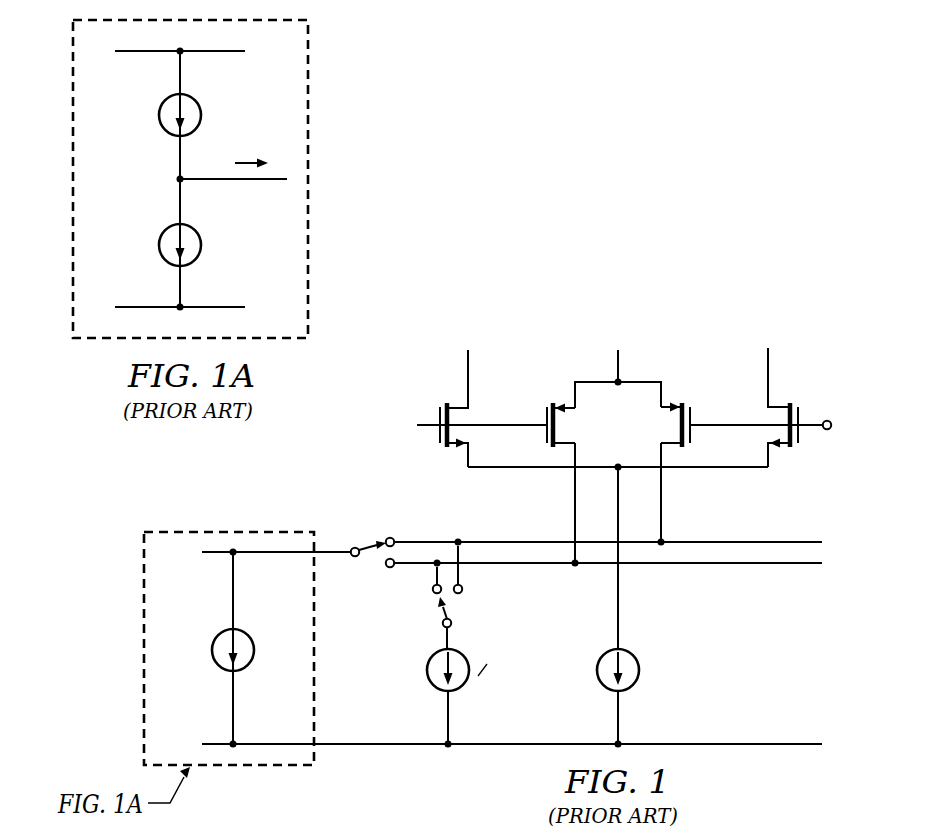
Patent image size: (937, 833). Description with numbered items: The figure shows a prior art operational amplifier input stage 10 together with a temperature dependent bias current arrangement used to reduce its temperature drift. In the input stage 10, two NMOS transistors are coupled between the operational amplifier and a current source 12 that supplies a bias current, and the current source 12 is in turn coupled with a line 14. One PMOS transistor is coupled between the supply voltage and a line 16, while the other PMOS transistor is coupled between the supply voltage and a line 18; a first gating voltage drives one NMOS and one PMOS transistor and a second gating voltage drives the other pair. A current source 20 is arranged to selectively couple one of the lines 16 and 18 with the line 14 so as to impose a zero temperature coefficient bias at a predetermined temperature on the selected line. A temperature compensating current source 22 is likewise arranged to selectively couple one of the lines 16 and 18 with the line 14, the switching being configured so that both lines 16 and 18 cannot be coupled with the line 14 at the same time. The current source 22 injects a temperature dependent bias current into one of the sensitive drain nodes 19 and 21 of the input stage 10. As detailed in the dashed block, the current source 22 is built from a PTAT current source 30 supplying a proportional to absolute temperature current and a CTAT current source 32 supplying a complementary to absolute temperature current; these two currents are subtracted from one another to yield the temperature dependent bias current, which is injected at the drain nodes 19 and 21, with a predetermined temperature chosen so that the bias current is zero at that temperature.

In FIG. 1, the operational amplifier input stage 10 is at (770, 310).
In FIG. 1, the current source 12 is at (597, 670).
In FIG. 1, the line 14 is at (790, 746).
In FIG. 1, the line 16 is at (790, 565).
In FIG. 1, the line 18 is at (790, 540).
In FIG. 1, the drain node 19 is at (666, 533).
In FIG. 1, the current source 20 is at (427, 670).
In FIG. 1, the drain node 21 is at (570, 570).
In FIG. 1A, the temperature compensating current source 22 is at (160, 179).
In FIG. 1, the temperature compensating current source 22 is at (212, 648).
In FIG. 1A, the PTAT current source 30 is at (205, 116).
In FIG. 1A, the CTAT current source 32 is at (205, 242).